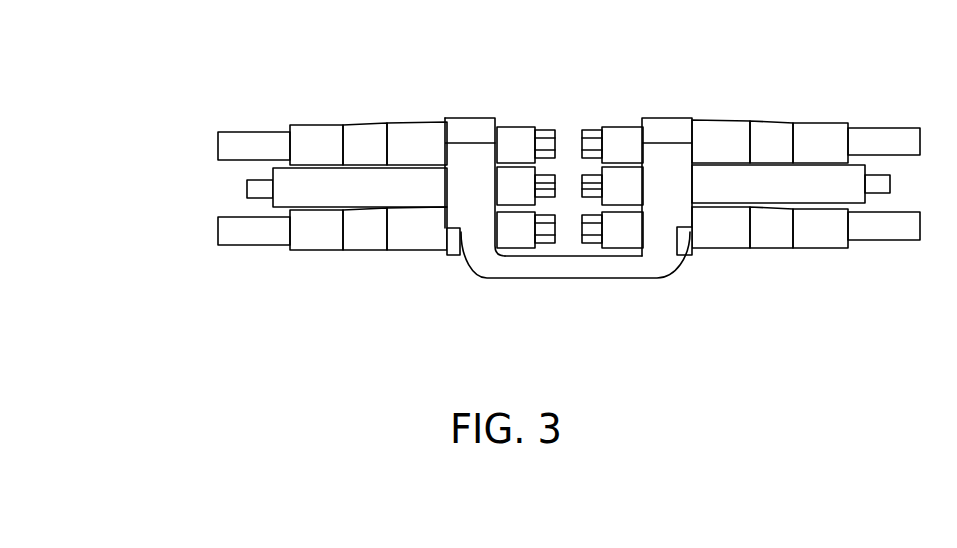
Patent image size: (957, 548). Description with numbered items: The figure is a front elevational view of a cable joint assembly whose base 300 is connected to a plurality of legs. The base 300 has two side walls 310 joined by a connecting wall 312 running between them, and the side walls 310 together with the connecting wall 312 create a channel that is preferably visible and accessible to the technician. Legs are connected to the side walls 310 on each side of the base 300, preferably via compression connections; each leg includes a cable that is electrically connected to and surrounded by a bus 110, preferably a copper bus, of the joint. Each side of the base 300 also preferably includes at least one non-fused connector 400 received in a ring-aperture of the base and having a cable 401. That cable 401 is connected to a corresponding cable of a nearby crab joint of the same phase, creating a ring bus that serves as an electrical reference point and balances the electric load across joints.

The bus 110 is at (712, 252).
The base 300 is at (494, 200).
The side walls 310 is at (467, 128).
The connecting wall 312 is at (525, 272).
The non-fused connector 400 is at (776, 183).
The cable 401 is at (877, 183).